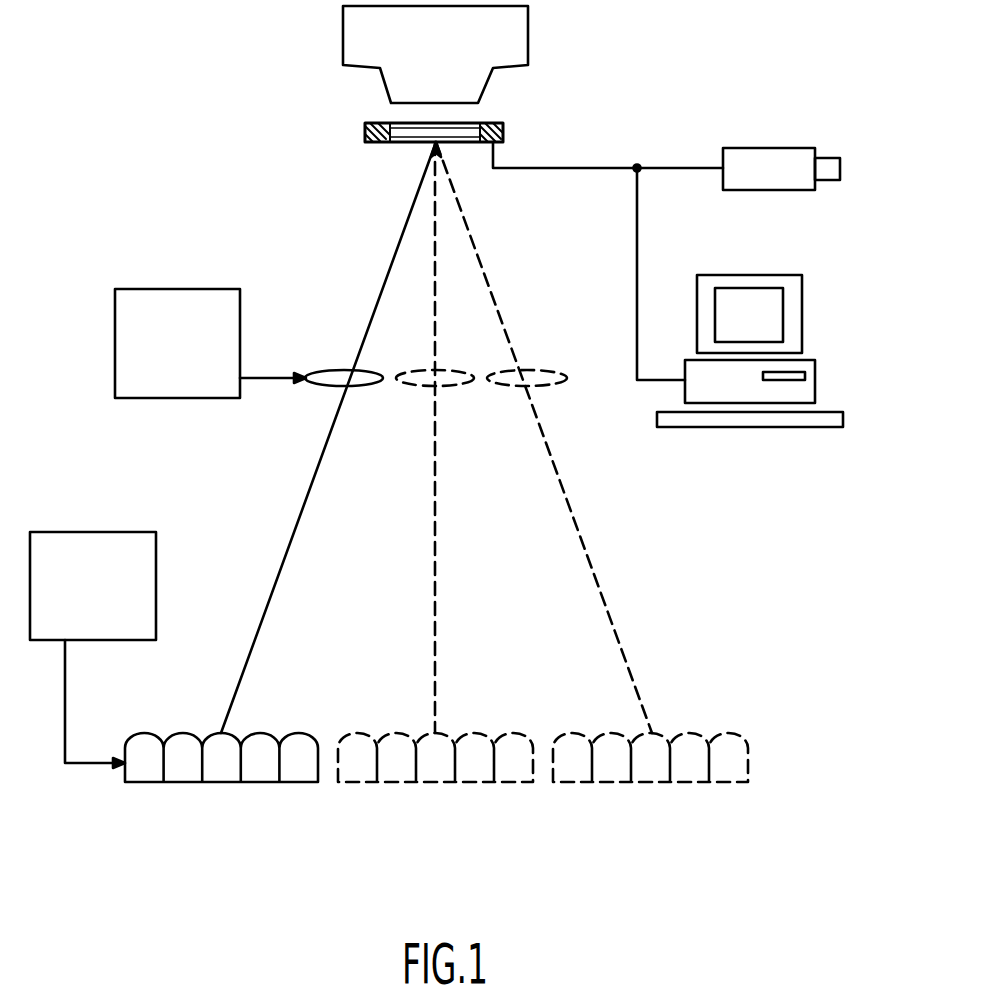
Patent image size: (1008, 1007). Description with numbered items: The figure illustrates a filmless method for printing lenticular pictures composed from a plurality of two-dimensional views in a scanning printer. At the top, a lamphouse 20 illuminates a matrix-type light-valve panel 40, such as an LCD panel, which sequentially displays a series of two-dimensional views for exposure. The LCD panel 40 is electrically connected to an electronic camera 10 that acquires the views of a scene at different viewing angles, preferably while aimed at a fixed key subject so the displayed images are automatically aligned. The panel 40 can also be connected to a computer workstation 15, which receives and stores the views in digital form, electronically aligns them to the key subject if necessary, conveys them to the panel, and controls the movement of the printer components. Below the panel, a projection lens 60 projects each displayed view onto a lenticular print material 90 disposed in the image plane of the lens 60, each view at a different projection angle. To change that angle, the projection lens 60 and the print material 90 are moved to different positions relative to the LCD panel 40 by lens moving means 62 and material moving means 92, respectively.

The electronic camera 10 is at (782, 155).
The computer workstation 15 is at (808, 385).
The lamphouse 20 is at (517, 30).
The matrix-type light-valve panel 40 is at (493, 124).
The projection lens 60 is at (338, 372).
The lens moving means 62 is at (140, 393).
The lenticular print material 90 is at (257, 772).
The material moving means 92 is at (148, 590).